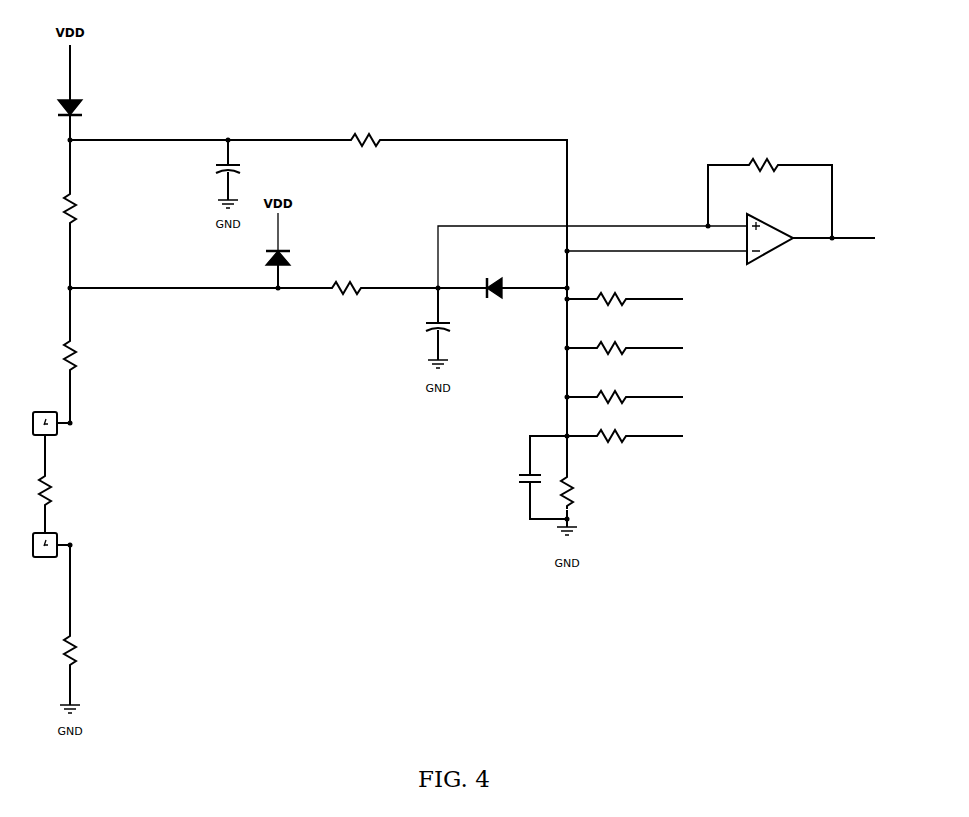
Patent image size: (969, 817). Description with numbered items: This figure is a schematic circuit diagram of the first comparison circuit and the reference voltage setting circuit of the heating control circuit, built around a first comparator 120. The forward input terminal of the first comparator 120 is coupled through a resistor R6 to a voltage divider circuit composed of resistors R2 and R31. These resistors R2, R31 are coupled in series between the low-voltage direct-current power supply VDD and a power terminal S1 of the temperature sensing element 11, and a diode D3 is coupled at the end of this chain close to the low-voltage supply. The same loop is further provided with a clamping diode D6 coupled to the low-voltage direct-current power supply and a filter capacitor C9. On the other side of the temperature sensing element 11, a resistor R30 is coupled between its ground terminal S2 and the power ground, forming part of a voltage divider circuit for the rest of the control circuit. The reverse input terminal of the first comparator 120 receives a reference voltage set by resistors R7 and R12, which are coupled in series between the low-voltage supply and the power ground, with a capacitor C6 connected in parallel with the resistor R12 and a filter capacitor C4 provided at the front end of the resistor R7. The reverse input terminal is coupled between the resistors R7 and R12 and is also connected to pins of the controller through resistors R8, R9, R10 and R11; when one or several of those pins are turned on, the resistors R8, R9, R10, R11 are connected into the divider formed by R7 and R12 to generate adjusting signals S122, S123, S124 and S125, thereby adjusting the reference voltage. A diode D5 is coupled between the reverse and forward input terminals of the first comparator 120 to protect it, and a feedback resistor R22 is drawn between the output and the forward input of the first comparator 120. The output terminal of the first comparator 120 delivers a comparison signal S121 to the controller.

The diode D3 is at (84, 112).
The resistor R2 is at (62, 211).
The resistor R31 is at (60, 351).
The power terminal S1 is at (45, 417).
The temperature sensing element 11 is at (55, 492).
The ground terminal S2 is at (32, 545).
The resistor R30 is at (60, 651).
The filter capacitor C4 is at (212, 175).
The clamping diode D6 is at (261, 254).
The resistor R7 is at (370, 135).
The resistor R6 is at (353, 283).
The filter capacitor C9 is at (455, 333).
The diode D5 is at (495, 280).
The resistor R8 is at (612, 297).
The resistor R9 is at (614, 345).
The resistor R10 is at (612, 395).
The resistor R11 is at (618, 443).
The resistor R12 is at (580, 488).
The capacitor C6 is at (514, 478).
The feedback resistor R22 is at (768, 162).
The first comparator 120 is at (776, 225).
The comparison signal S121 is at (901, 239).
The adjusting signal S122 is at (708, 299).
The adjusting signal S123 is at (708, 348).
The adjusting signal S124 is at (708, 397).
The adjusting signal S125 is at (708, 436).